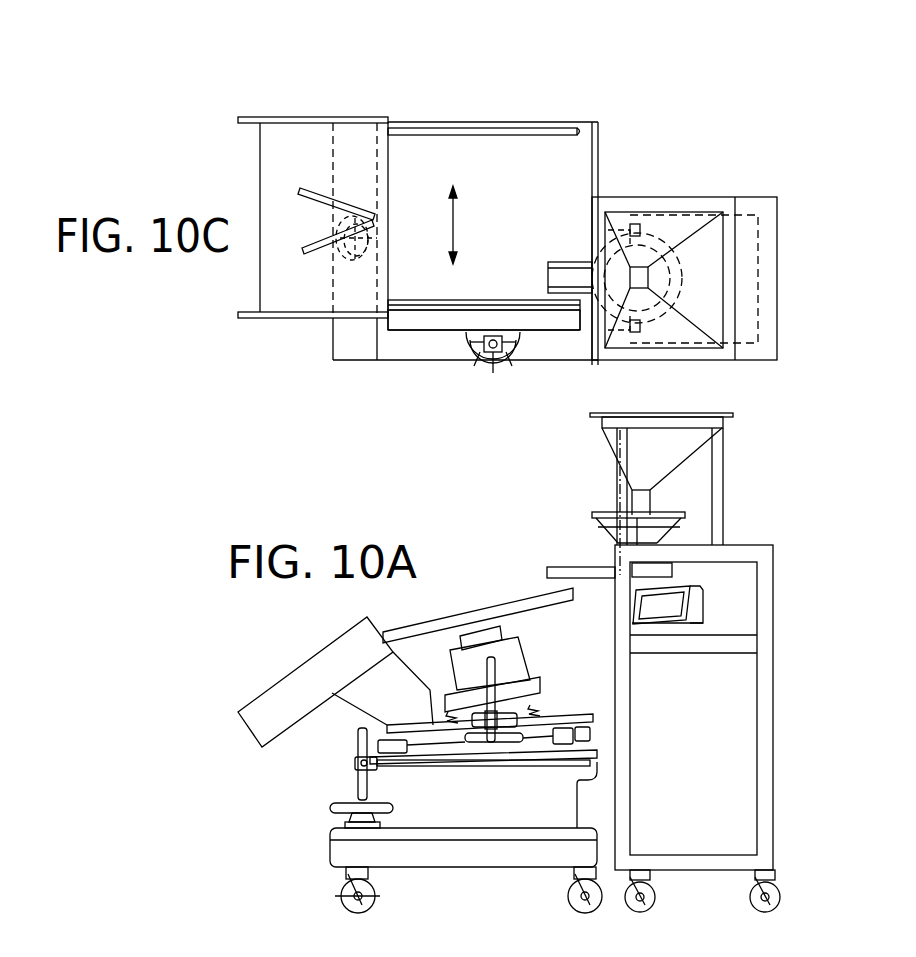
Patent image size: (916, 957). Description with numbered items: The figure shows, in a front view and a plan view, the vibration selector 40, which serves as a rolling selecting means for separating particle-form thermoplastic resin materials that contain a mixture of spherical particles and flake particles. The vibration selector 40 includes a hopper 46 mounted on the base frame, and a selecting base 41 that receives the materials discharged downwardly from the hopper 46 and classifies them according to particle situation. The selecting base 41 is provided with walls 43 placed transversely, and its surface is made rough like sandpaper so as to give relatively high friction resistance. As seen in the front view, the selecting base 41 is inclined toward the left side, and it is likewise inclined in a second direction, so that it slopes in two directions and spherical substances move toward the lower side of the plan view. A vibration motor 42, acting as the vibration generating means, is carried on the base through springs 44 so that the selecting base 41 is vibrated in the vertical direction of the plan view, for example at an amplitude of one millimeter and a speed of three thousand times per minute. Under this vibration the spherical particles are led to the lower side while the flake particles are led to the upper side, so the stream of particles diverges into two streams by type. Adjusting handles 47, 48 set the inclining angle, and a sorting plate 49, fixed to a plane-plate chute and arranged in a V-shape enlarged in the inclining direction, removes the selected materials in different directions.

In FIG. 10C, the vibration selector 40 is at (790, 292).
In FIG. 10A, the vibration selector 40 is at (762, 482).
In FIG. 10C, the selecting base 41 is at (550, 183).
In FIG. 10A, the vibration motor 42 is at (513, 662).
In FIG. 10C, the walls 43 is at (425, 132).
In FIG. 10A, the springs 44 is at (540, 707).
In FIG. 10C, the hopper 46 is at (700, 205).
In FIG. 10A, the hopper 46 is at (645, 460).
In FIG. 10A, the adjusting handle 47 is at (335, 805).
In FIG. 10A, the adjusting handle 48 is at (493, 737).
In FIG. 10C, the sorting plate 49 is at (300, 202).